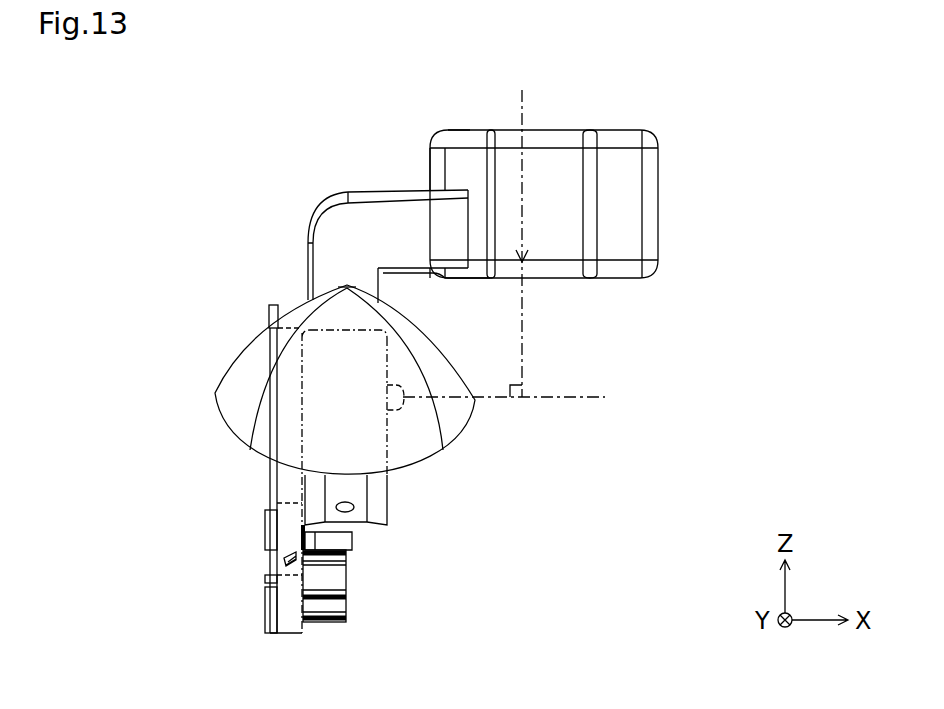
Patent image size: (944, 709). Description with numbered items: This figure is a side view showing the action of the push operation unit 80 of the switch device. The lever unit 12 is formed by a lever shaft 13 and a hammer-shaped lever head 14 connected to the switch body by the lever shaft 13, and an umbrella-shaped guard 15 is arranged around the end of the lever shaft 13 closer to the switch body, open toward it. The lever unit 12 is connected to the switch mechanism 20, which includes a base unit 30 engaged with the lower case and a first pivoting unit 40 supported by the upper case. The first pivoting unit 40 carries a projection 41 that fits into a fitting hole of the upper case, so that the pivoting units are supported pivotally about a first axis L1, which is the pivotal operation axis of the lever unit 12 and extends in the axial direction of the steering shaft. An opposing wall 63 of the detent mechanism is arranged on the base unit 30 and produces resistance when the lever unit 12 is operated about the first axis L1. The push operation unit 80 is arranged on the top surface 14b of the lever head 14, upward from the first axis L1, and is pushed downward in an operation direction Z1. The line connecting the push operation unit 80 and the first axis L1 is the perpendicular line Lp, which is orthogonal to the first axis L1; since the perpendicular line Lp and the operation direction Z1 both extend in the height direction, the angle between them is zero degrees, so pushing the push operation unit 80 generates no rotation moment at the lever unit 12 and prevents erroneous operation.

The lever unit 12 is at (430, 103).
The lever shaft 13 is at (368, 192).
The lever head 14 is at (437, 168).
The top surface 14b is at (477, 130).
The push operation unit 80 is at (560, 133).
The guard 15 is at (248, 342).
The projection 41 is at (398, 410).
The base unit 30 is at (270, 485).
The first pivoting unit 40 is at (387, 500).
The opposing wall 63 is at (347, 605).
The switch mechanism 20 is at (459, 601).
The operation direction Z1 is at (522, 195).
The perpendicular line Lp is at (522, 340).
The first axis L1 is at (578, 397).